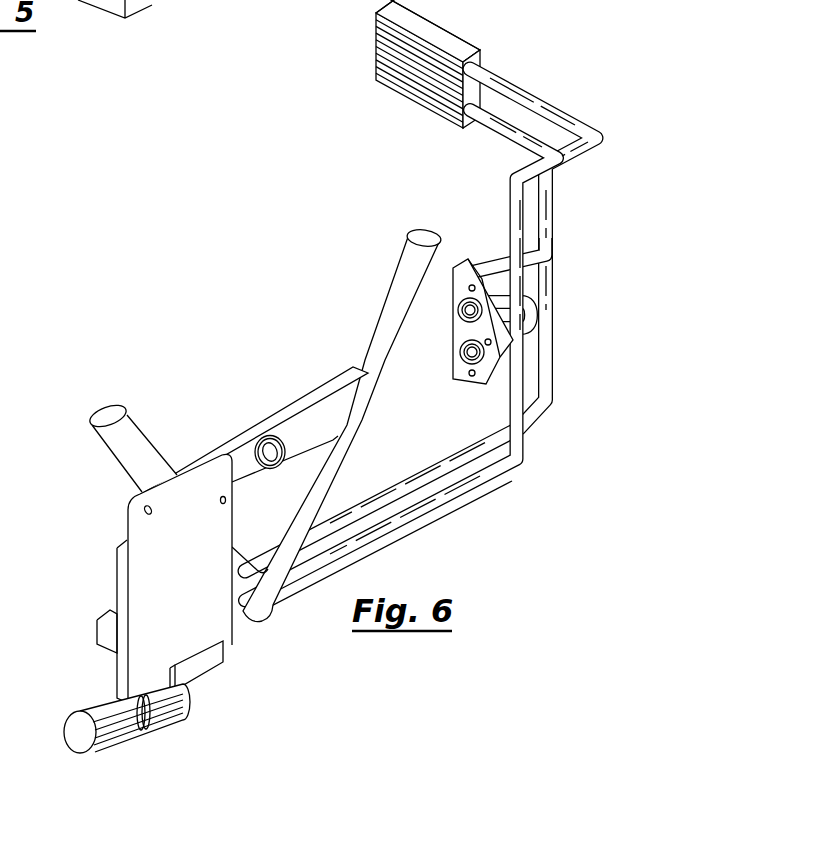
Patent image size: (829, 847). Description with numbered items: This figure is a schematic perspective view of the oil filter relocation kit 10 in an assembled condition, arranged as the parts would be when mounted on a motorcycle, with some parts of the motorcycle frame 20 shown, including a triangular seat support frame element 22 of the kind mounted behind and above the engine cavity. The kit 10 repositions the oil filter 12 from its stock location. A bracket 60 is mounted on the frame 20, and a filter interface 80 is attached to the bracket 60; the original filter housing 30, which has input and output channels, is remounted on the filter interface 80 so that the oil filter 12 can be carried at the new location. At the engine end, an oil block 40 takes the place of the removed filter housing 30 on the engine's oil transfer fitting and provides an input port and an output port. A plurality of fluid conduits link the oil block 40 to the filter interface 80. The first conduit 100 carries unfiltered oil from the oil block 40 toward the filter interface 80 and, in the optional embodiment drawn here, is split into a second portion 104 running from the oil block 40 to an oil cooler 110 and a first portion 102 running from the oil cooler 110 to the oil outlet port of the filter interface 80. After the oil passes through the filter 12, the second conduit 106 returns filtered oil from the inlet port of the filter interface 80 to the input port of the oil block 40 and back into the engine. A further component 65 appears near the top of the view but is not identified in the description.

The connector block 65 is at (80, 0).
The oil filter relocation kit 10 is at (358, 260).
The oil filter 12 is at (105, 707).
The frame 20 is at (110, 445).
The seat support frame element 22 is at (137, 423).
The filter housing 30 is at (162, 705).
The oil block 40 is at (468, 380).
The bracket 60 is at (155, 587).
The filter interface 80 is at (207, 663).
The first conduit 100 is at (505, 133).
The first portion of the first conduit 102 is at (565, 157).
The second portion of the first conduit 104 is at (518, 205).
The second conduit 106 is at (550, 322).
The oil cooler 110 is at (407, 17).